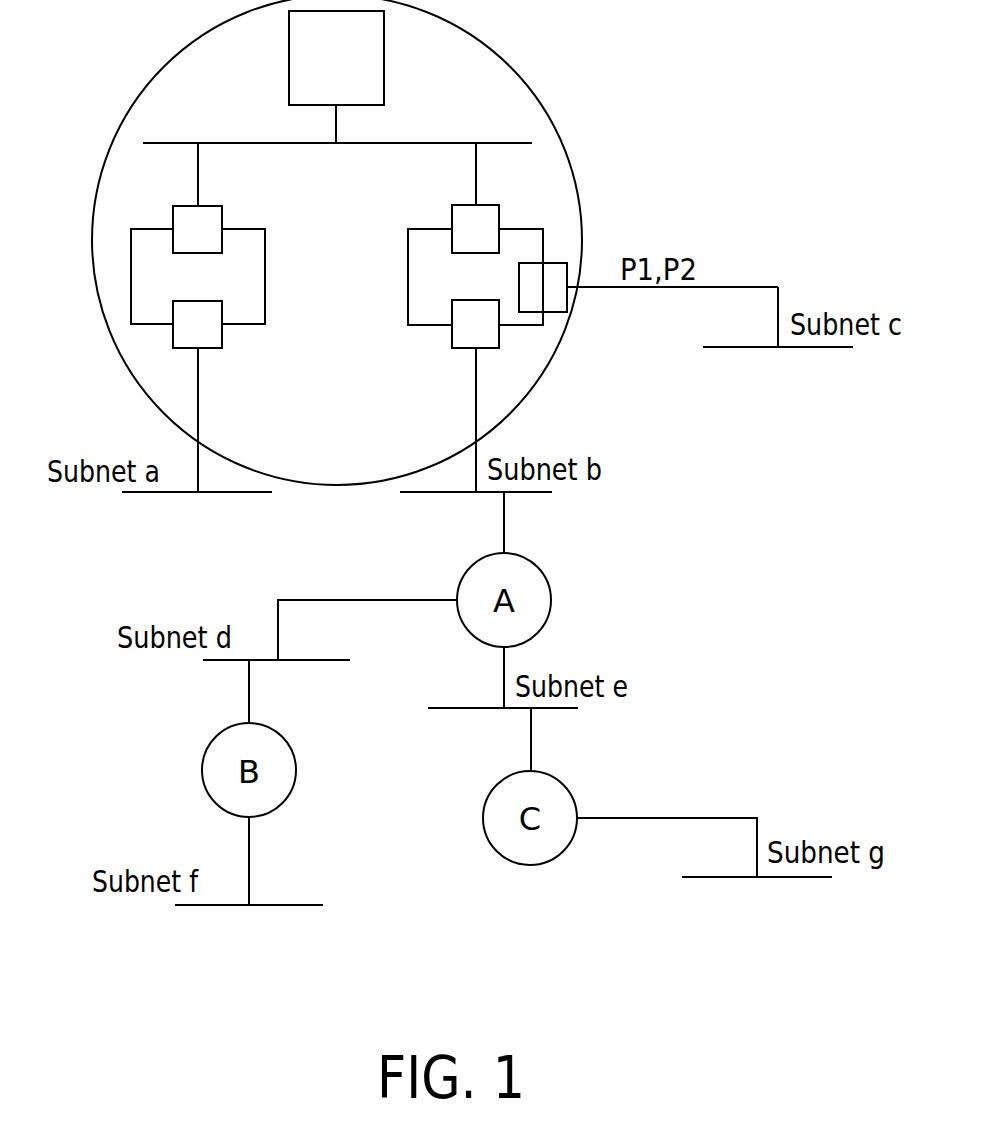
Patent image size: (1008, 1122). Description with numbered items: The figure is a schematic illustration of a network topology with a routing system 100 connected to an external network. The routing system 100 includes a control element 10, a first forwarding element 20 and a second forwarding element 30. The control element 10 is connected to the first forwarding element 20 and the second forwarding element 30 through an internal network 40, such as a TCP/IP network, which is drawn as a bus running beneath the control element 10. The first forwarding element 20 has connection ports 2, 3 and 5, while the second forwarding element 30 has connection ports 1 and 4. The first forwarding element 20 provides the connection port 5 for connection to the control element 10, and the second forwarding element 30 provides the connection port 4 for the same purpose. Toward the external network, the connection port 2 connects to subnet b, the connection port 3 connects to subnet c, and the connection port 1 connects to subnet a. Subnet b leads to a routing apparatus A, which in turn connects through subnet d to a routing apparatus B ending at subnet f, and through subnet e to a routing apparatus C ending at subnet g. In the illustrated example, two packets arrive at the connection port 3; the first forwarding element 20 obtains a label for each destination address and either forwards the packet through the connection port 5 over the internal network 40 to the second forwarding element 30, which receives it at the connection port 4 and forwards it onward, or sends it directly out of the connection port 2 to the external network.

The routing system 100 is at (205, 70).
The control element 10 is at (336, 77).
The internal network 40 is at (508, 142).
The second forwarding element 30 is at (198, 276).
The first forwarding element 20 is at (475, 277).
The connection port 1 is at (197, 396).
The connection port 2 is at (475, 396).
The connection port 3 is at (648, 287).
The connection port 4 is at (197, 198).
The connection port 5 is at (475, 198).